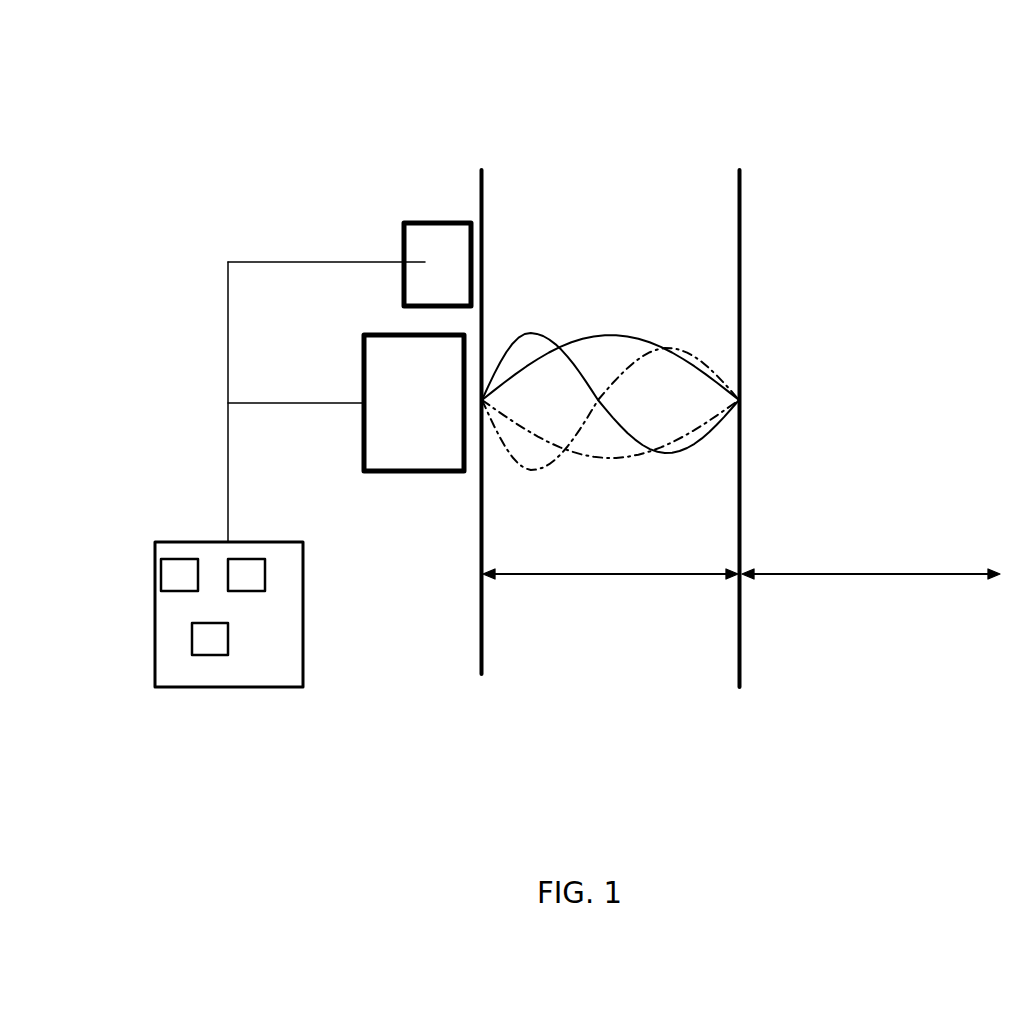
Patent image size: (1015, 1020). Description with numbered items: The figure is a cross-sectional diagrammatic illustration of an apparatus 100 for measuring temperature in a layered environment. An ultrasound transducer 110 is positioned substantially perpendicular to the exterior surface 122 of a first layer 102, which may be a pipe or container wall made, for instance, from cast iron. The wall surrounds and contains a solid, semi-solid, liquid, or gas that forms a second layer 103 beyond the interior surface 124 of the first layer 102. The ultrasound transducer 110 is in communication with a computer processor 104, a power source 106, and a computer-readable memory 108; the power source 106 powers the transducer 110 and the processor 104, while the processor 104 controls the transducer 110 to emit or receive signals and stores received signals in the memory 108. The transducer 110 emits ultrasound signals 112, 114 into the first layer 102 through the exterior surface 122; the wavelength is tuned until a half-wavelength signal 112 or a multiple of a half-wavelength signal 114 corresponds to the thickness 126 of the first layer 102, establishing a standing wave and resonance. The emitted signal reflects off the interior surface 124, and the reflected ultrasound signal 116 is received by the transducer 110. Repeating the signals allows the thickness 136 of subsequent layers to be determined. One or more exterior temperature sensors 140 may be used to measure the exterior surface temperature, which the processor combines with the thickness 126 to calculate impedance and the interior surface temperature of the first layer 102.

The apparatus for measuring temperature in a layered environment 100 is at (311, 97).
The first layer 102 is at (628, 663).
The second layer 103 is at (844, 658).
The computer processor 104 is at (183, 563).
The power source 106 is at (251, 573).
The computer-readable memory 108 is at (195, 628).
The ultrasound transducer 110 is at (407, 358).
The first ultrasound signal 112 is at (648, 345).
The ultrasound signal 114 is at (543, 333).
The reflected ultrasound signal 116 is at (622, 458).
The exterior surface 122 is at (480, 181).
The interior surface 124 is at (741, 190).
The thickness 126 is at (610, 560).
The thickness 136 is at (871, 553).
The exterior temperature sensor 140 is at (415, 233).